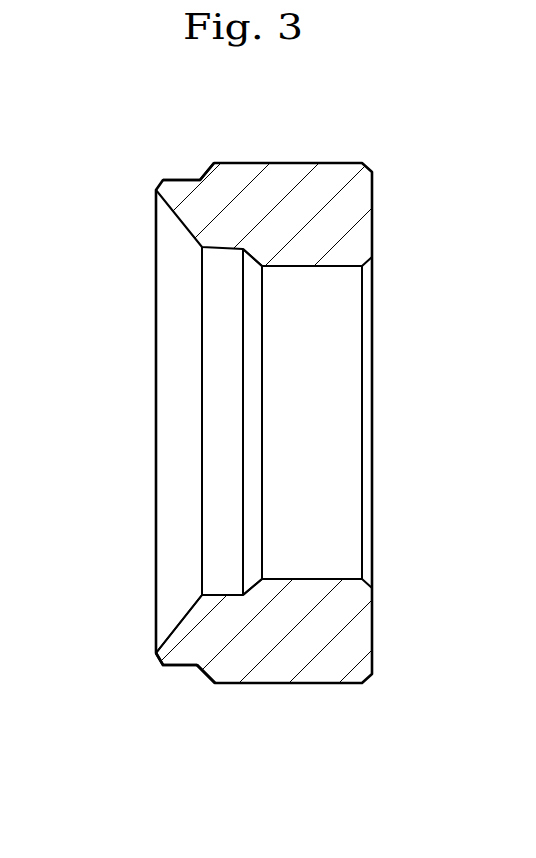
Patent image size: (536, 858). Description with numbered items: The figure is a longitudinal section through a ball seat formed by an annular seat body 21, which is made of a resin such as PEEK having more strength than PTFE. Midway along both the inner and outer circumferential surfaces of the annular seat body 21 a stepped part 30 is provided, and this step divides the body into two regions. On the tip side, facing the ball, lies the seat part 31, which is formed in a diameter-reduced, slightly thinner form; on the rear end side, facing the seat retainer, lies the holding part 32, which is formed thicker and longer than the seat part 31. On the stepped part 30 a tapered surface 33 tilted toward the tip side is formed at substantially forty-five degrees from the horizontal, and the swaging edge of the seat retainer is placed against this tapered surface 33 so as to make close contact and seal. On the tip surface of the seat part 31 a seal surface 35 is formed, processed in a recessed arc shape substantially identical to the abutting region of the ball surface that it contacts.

The annular seat body 21 is at (278, 705).
The stepped part 30 is at (200, 180).
The seat part 31 is at (185, 653).
The holding part 32 is at (323, 190).
The tapered surface 33 is at (258, 581).
The seal surface 35 is at (183, 627).